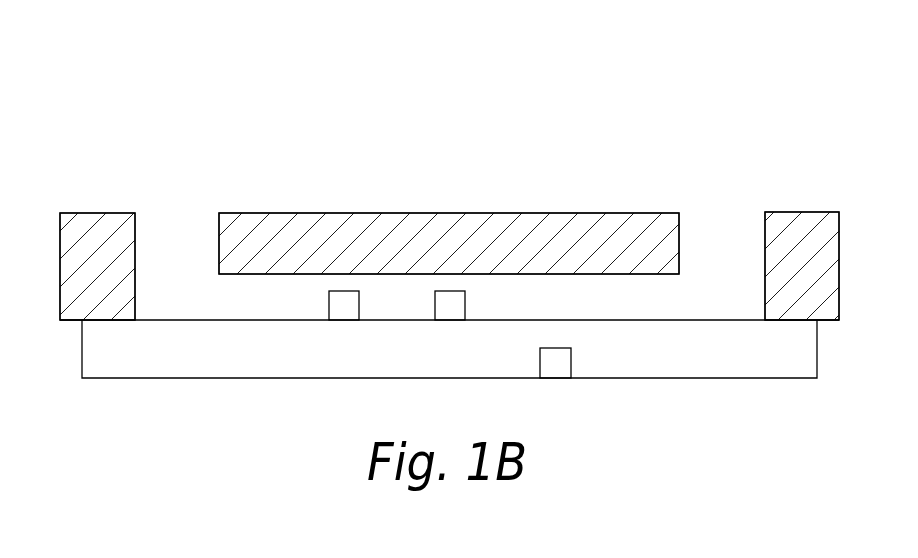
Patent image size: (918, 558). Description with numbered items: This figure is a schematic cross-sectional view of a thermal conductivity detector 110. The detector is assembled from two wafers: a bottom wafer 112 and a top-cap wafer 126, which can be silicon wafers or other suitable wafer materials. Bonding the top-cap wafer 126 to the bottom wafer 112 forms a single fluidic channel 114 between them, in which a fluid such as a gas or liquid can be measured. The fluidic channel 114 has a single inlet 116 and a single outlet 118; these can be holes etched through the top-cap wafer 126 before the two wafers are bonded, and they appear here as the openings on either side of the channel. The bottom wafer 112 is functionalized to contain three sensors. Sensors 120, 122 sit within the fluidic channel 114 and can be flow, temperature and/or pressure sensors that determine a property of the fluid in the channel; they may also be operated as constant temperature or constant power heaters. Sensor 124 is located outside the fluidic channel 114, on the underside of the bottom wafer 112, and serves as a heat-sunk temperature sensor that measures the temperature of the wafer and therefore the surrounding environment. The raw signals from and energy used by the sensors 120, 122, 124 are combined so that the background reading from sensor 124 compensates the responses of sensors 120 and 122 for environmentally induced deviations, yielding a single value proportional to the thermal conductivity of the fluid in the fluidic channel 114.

The thermal conductivity detector 110 is at (202, 92).
The bottom wafer 112 is at (630, 325).
The fluidic channel 114 is at (572, 279).
The inlet 116 is at (180, 232).
The outlet 118 is at (725, 222).
The sensor 120 is at (329, 307).
The sensor 122 is at (466, 307).
The sensor 124 is at (572, 364).
The top-cap wafer 126 is at (96, 220).